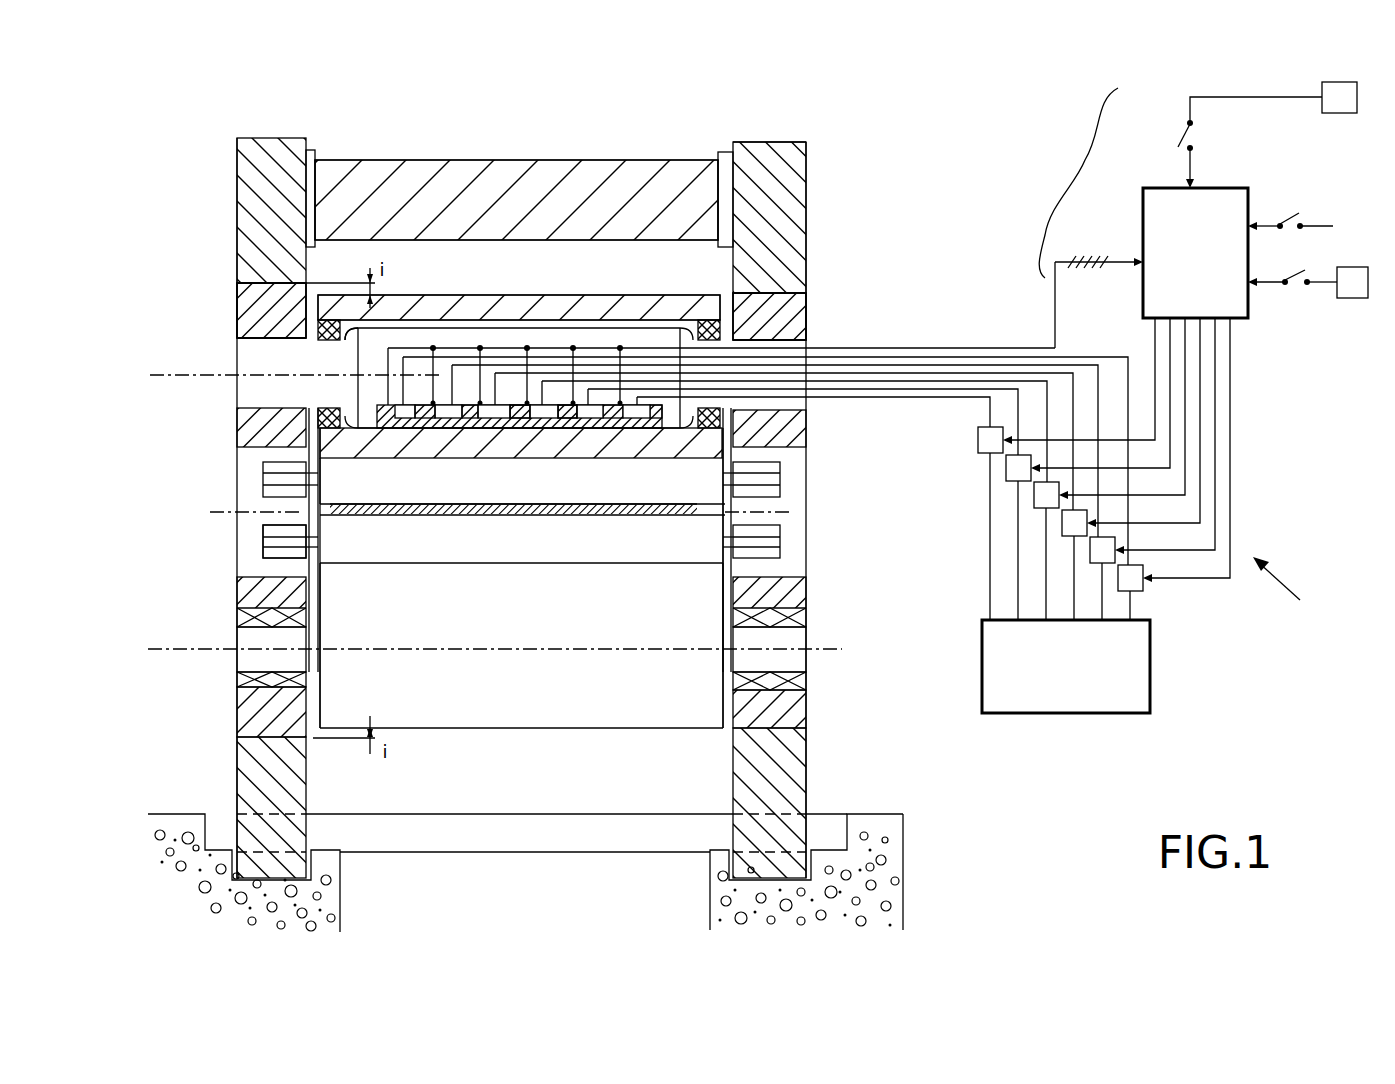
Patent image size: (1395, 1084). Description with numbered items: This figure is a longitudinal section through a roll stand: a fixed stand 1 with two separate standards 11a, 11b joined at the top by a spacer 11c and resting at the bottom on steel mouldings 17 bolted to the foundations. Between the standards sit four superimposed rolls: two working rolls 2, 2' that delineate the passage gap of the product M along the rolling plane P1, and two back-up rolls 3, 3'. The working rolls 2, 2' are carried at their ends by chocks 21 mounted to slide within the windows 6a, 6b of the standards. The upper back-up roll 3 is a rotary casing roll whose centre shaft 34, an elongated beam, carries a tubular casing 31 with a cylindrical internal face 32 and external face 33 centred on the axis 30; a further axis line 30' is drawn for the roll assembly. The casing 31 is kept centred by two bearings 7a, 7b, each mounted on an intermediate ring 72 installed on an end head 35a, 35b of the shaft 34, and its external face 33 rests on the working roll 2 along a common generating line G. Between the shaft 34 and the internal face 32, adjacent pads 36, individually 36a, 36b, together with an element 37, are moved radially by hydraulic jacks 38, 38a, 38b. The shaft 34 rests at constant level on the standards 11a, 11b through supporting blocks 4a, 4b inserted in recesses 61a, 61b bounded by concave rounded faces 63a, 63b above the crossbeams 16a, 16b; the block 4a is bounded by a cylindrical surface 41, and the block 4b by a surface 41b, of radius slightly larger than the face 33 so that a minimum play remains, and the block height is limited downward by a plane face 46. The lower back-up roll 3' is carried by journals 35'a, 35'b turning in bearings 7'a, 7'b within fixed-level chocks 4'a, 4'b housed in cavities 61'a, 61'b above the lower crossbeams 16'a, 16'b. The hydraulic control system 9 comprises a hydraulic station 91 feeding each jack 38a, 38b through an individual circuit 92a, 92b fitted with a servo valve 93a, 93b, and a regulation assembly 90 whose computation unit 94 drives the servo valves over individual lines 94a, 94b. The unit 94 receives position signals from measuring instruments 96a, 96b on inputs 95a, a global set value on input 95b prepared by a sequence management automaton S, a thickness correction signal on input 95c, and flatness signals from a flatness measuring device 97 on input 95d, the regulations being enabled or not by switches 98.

The fixed stand 1 is at (794, 135).
The working roll 2 is at (581, 449).
The working roll 2' is at (598, 536).
The back-up roll 3 is at (519, 207).
The back-up roll 3' is at (495, 670).
The supporting block 4a is at (237, 334).
The supporting block 4b is at (806, 325).
The chock 4'a is at (225, 673).
The chock 4'b is at (810, 696).
The window 6a is at (250, 533).
The window 6b is at (790, 505).
The bearing 7a is at (335, 320).
The bearing 7b is at (710, 322).
The bearing 7'a is at (241, 602).
The bearing 7'b is at (793, 602).
The hydraulic control system 9 is at (1302, 592).
The standard 11a is at (237, 252).
The standard 11b is at (806, 229).
The spacer 11c is at (373, 200).
The crossbeam 16a is at (268, 205).
The crossbeam 16b is at (773, 188).
The crossbeam 16'a is at (271, 807).
The crossbeam 16'b is at (769, 803).
The steel moulding 17 is at (427, 837).
The chock 21 is at (277, 490).
The axis 30 is at (516, 167).
The axis 30' is at (293, 391).
The tubular casing 31 is at (493, 300).
The internal face 32 is at (568, 405).
The external face 33 is at (412, 340).
The centre shaft 34 is at (420, 348).
The end head 35a is at (258, 397).
The end head 35b is at (777, 400).
The journal 35'a is at (221, 645).
The journal 35'b is at (813, 655).
The pad 36 is at (658, 400).
The pad 36a is at (422, 428).
The pad 36b is at (518, 428).
The sensor 37 is at (512, 405).
The hydraulic jack 38 is at (613, 405).
The hydraulic jack 38a is at (468, 428).
The hydraulic jack 38b is at (565, 428).
The cylindrical surface 41 is at (275, 248).
The cylindrical surface 41b is at (773, 270).
The plane face 46 is at (270, 453).
The recess 61a is at (237, 329).
The recess 61b is at (806, 311).
The cavity 61'a is at (246, 712).
The cavity 61'b is at (793, 724).
The concave rounded face 63a is at (237, 300).
The concave rounded face 63b is at (780, 307).
The intermediate ring 72 is at (330, 412).
The regulation assembly 90 is at (1078, 183).
The hydraulic station 91 is at (1140, 682).
The circuit 92a is at (990, 573).
The circuit 92b is at (1018, 597).
The servo valve 93a is at (978, 440).
The servo valve 93b is at (1006, 468).
The computation unit 94 is at (1232, 300).
The individual line 94a is at (1153, 337).
The individual line 94b is at (1168, 355).
The position measurement signal inputs 95a is at (1141, 258).
The set value input 95b is at (1192, 182).
The thickness correction input 95c is at (1257, 222).
The flatness signal input 95d is at (1257, 280).
The measuring instrument 96a is at (378, 414).
The measuring instrument 96b is at (445, 402).
The flatness measuring device 97 is at (1352, 300).
The switch 98 is at (1180, 140).
The common generating line G is at (338, 462).
The product M is at (460, 516).
The rolling plane P1 is at (488, 520).
The sequence management automaton S is at (1273, 154).